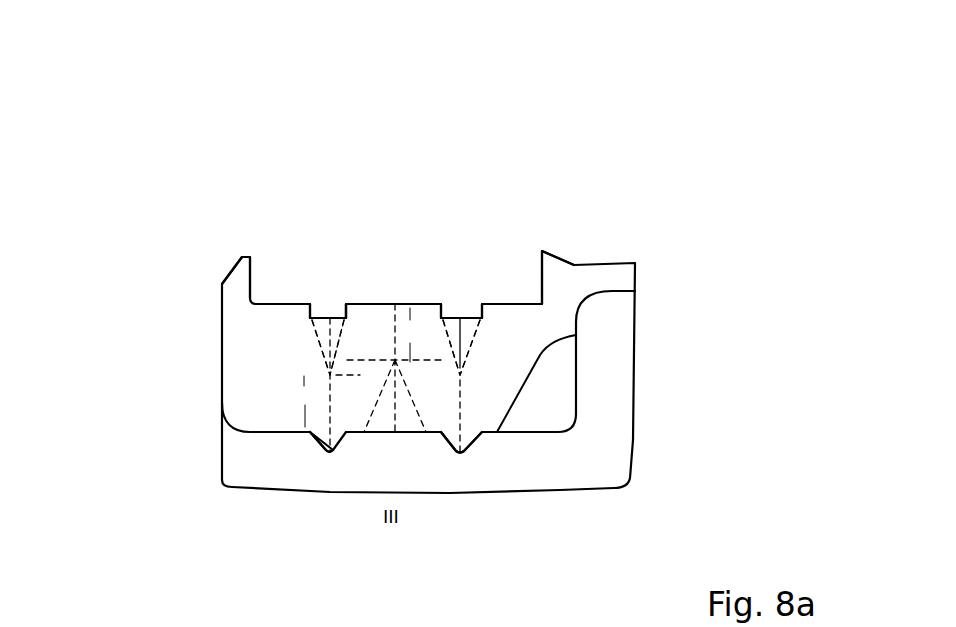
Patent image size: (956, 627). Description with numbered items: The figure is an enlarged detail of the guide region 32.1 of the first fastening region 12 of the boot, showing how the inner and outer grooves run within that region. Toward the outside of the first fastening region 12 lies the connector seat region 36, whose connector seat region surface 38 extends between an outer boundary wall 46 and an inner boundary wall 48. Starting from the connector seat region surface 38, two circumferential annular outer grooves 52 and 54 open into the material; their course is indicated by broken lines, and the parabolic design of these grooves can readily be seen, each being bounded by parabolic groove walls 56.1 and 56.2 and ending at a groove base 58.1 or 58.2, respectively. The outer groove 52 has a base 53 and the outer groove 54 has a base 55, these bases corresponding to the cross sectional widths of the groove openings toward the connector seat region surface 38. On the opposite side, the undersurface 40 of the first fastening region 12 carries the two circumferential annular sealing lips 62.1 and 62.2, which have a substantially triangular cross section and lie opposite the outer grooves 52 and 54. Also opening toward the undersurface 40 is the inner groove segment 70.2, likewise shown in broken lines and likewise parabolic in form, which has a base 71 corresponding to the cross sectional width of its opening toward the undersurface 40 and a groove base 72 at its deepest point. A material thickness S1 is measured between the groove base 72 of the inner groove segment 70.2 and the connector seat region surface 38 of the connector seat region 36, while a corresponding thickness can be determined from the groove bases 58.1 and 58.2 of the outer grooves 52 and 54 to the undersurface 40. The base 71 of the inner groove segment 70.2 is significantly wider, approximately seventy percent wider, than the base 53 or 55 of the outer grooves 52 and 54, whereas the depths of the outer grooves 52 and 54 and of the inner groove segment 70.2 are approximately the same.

The first fastening region 12 is at (604, 128).
The guide region 32.1 is at (160, 416).
The connector seat region 36 is at (350, 180).
The connector seat region surface 38 is at (294, 290).
The undersurface 40 is at (304, 438).
The outer boundary wall 46 is at (263, 288).
The inner boundary wall 48 is at (535, 290).
The outer groove 52 is at (334, 290).
The base of outer groove 53 is at (345, 310).
The outer groove 54 is at (468, 288).
The base of outer groove 55 is at (457, 318).
The material thickness S1 is at (403, 335).
The parabolic groove wall 56.1 is at (403, 360).
The parabolic groove wall 56.2 is at (468, 362).
The groove base 58.1 is at (330, 372).
The groove base 58.2 is at (461, 376).
The sealing lip 62.1 is at (329, 456).
The sealing lip 62.2 is at (467, 445).
The inner groove segment 70.2 is at (405, 440).
The base of inner groove segment 71 is at (410, 437).
The groove base 72 is at (302, 432).